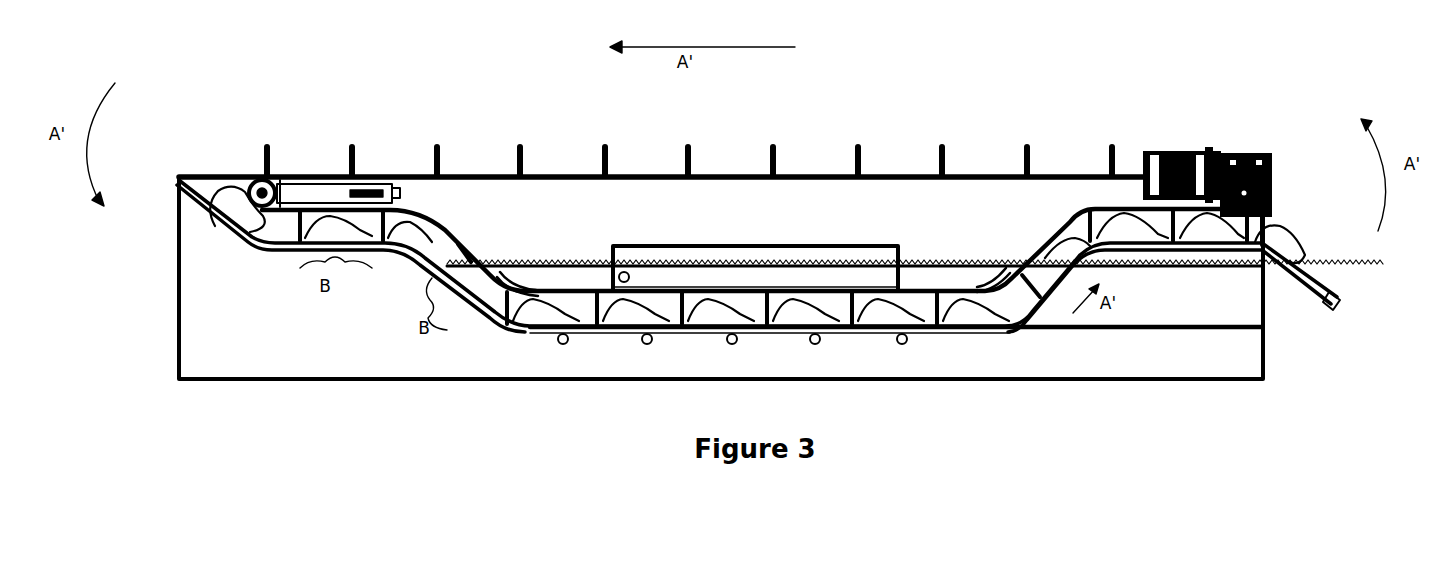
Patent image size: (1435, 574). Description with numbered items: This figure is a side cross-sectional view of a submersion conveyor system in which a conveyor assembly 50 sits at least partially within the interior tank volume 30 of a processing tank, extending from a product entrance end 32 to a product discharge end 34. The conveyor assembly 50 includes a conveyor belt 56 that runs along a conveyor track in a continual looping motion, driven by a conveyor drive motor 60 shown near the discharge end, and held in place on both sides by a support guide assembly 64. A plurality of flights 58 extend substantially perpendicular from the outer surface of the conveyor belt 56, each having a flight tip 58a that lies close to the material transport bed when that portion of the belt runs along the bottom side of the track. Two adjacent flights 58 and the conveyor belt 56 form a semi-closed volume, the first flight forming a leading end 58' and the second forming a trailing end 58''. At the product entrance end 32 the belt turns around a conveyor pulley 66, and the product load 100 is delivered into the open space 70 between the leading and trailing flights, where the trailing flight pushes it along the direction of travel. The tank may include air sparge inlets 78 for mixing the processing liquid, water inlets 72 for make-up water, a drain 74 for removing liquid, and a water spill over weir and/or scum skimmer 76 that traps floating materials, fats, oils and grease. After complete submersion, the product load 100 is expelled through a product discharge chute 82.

The interior tank volume 30 is at (942, 237).
The product entrance end 32 is at (170, 157).
The product discharge end 34 is at (1292, 208).
The conveyor assembly 50 is at (389, 93).
The conveyor belt 56 is at (648, 170).
The flight 58 is at (757, 212).
The flight tip 58a is at (520, 150).
The leading end 58' is at (406, 273).
The trailing end 58'' is at (273, 279).
The conveyor drive motor 60 is at (1195, 150).
The support guide assembly 64 is at (518, 268).
The conveyor pulley 66 is at (255, 172).
The open space 70 is at (228, 158).
The water inlet 72 is at (650, 345).
The drain 74 is at (606, 258).
The water spill over weir and/or scum skimmer 76 is at (778, 258).
The air sparge inlet 78 is at (316, 190).
The product discharge chute 82 is at (1343, 300).
The product load 100 is at (228, 216).